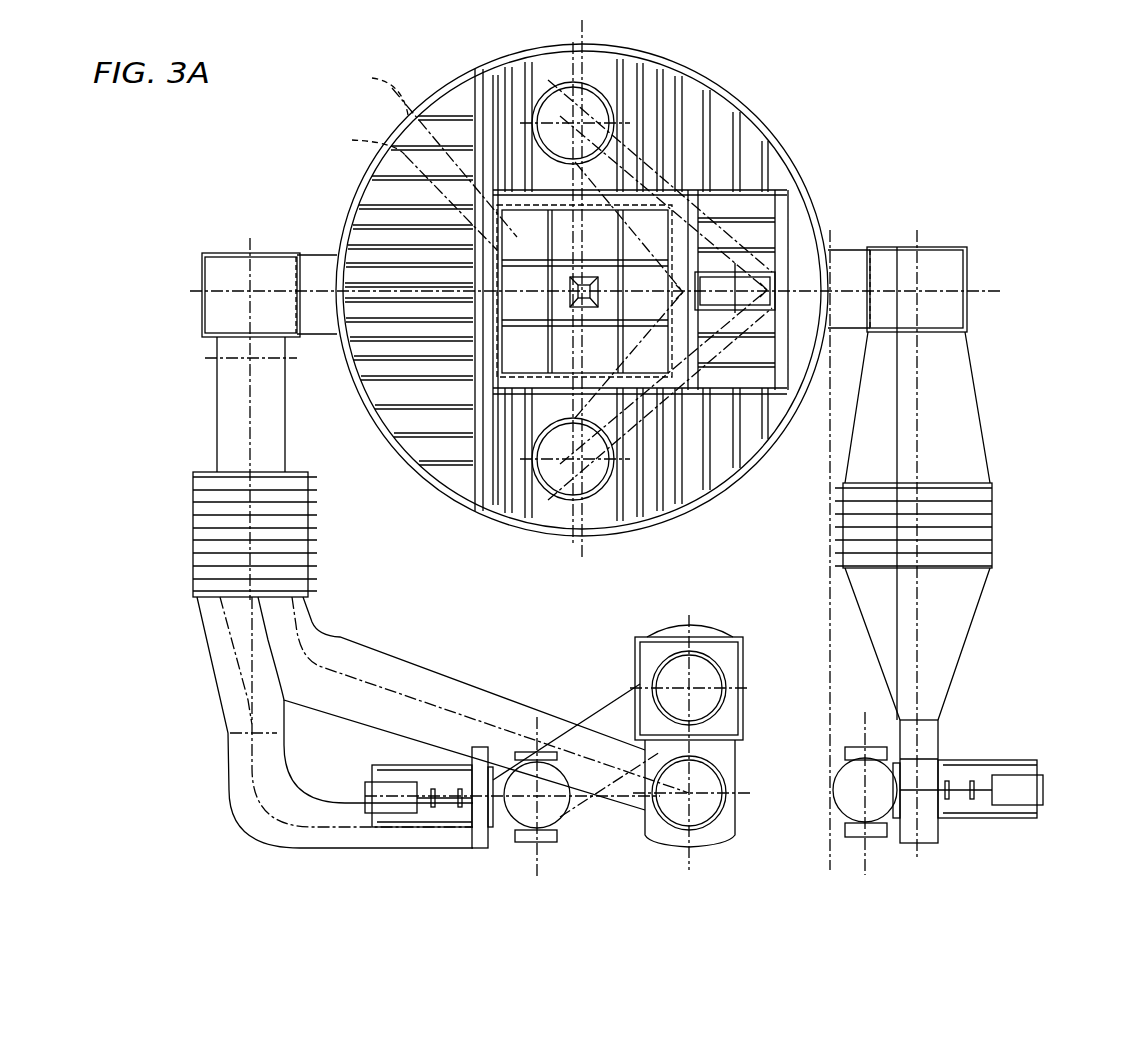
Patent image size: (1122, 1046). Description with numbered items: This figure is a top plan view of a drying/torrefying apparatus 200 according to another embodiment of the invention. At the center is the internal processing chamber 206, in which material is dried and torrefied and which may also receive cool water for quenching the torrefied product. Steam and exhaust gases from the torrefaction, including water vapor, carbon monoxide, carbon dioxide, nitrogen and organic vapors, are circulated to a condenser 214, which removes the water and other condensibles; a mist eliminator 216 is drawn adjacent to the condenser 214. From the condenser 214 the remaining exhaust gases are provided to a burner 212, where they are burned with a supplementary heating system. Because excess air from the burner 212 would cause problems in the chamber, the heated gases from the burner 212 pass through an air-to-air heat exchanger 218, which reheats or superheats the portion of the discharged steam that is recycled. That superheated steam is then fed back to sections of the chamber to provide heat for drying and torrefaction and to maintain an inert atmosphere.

The apparatus 200 is at (895, 74).
The internal processing chamber 206 is at (805, 232).
The burner 212 is at (193, 537).
The condenser 214 is at (727, 827).
The mist eliminator 216 is at (678, 677).
The heat exchanger 218 is at (993, 528).